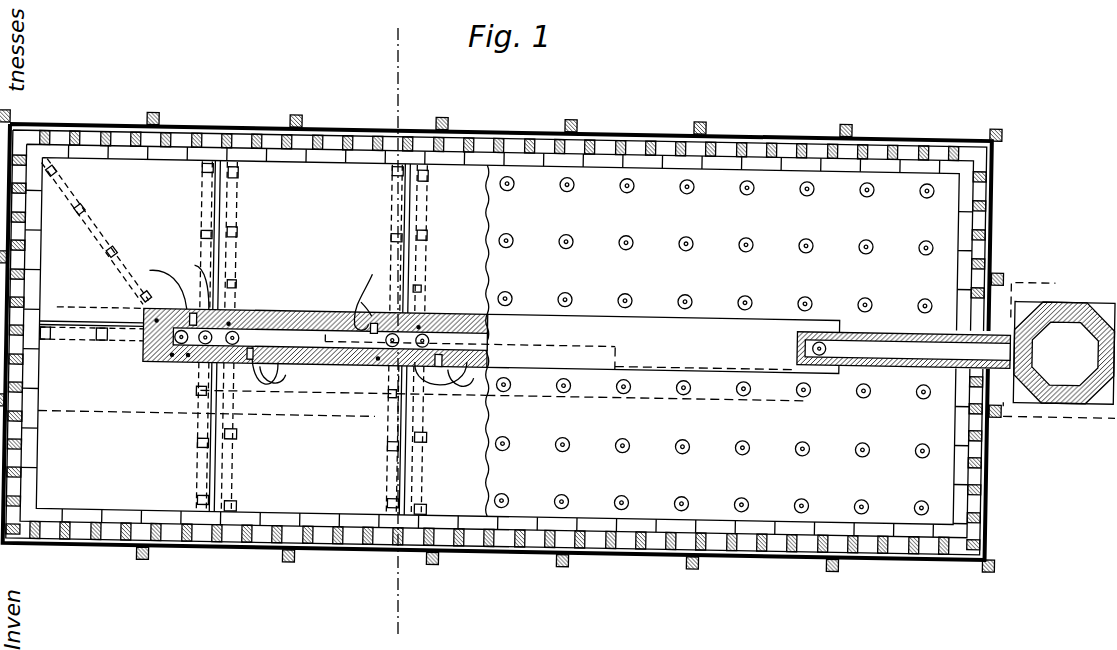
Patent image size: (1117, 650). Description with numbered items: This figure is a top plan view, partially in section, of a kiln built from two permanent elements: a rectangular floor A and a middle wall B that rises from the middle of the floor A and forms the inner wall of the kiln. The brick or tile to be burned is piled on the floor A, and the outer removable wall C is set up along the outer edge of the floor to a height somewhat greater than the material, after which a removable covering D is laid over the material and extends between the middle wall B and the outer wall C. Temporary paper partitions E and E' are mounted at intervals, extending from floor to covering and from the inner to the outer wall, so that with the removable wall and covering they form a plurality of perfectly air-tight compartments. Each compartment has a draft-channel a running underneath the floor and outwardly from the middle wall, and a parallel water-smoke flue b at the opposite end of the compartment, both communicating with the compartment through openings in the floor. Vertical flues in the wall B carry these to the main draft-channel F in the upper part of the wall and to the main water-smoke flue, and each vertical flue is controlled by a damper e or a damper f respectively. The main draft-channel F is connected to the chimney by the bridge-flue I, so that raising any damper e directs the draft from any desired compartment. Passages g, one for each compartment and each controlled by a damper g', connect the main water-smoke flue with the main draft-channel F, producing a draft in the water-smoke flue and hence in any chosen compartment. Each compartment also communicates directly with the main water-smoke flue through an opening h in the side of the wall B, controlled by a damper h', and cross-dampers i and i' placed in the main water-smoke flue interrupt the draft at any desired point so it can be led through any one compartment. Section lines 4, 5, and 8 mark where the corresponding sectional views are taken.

The floor A is at (152, 177).
The wall B is at (653, 311).
The outer removable wall C is at (317, 160).
The removable covering D is at (578, 283).
The temporary paper partitions E is at (245, 335).
The temporary paper partition E' is at (426, 339).
The main draft-channel F is at (489, 338).
The bridge-flue I is at (878, 347).
The draft-channel a is at (201, 215).
The water-smoke flue b is at (236, 207).
The damper e is at (822, 336).
The damper f is at (143, 312).
The passages g is at (325, 324).
The dampers g' is at (307, 320).
The opening h is at (250, 357).
The damper h' is at (350, 343).
The cross-damper i is at (263, 341).
The cross-damper i' is at (341, 304).
The section line 4 4 is at (1088, 430).
The section line 5 5 is at (1062, 339).
The section line 8 8 is at (396, 327).